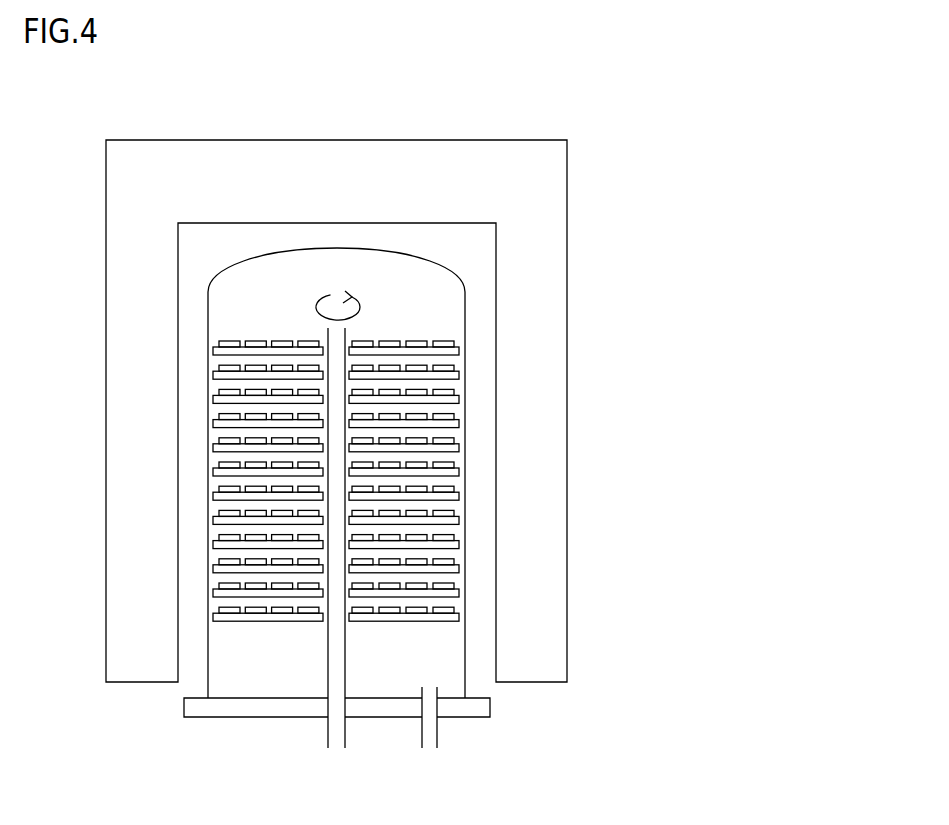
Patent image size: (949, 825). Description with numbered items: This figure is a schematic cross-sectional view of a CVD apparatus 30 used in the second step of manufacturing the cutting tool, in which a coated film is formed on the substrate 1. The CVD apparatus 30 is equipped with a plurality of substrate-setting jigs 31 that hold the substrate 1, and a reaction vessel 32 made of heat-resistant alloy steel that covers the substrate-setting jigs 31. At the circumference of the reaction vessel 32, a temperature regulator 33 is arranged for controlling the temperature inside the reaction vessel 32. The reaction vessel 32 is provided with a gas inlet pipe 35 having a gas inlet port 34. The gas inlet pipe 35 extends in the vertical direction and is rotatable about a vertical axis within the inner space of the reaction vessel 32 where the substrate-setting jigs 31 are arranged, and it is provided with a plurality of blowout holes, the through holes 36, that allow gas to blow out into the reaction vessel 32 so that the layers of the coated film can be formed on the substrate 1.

The CVD apparatus 30 is at (537, 121).
The temperature regulator 33 is at (529, 175).
The reaction vessel 32 is at (445, 268).
The substrate-setting jigs 31 is at (463, 520).
The substrate 1 is at (445, 442).
The gas inlet pipe 35 is at (348, 331).
The through holes 36 is at (328, 602).
The gas inlet port 34 is at (340, 742).